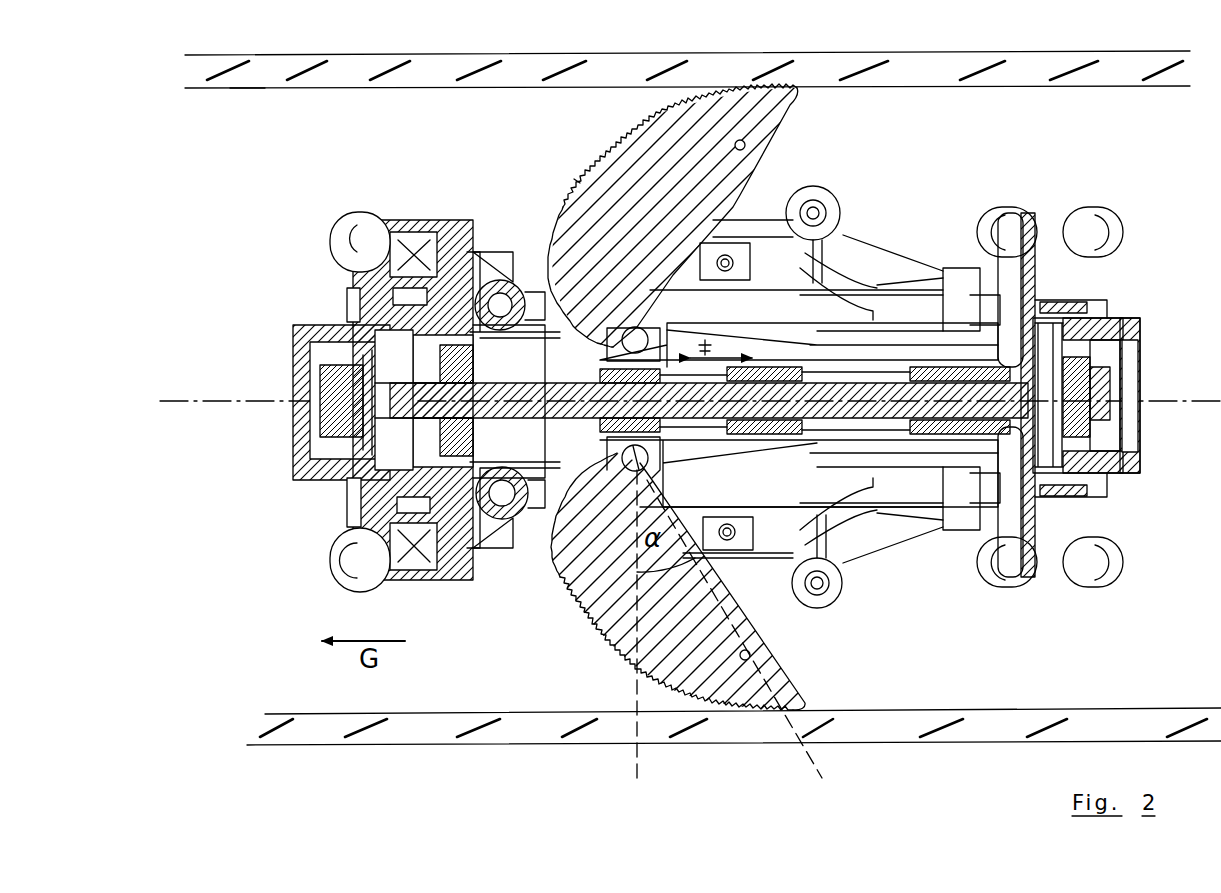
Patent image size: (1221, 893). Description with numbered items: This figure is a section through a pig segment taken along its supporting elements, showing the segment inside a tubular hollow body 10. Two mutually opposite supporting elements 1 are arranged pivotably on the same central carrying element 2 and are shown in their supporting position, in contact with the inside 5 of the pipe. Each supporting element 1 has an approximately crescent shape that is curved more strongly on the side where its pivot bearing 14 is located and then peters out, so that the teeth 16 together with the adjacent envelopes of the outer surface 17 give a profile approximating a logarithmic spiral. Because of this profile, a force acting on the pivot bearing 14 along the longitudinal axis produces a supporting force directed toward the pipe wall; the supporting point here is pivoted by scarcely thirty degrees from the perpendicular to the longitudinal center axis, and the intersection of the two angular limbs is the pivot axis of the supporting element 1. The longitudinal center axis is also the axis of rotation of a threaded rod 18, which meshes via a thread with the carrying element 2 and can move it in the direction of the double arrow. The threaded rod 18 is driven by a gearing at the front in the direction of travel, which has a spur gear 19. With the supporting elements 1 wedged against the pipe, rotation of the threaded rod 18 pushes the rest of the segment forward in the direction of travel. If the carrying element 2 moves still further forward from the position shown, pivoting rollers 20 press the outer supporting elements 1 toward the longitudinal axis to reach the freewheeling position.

The supporting element 1 is at (660, 397).
The carrying element 2 is at (605, 350).
The inside of the tubular hollow body 5 is at (247, 100).
The tubular hollow body 10 is at (232, 70).
The pivot bearing 14 is at (660, 335).
The teeth 16 is at (612, 152).
The outer surface 17 is at (570, 180).
The threaded rod 18 is at (855, 413).
The spur gear 19 is at (417, 437).
The pivoting rollers 20 is at (527, 272).